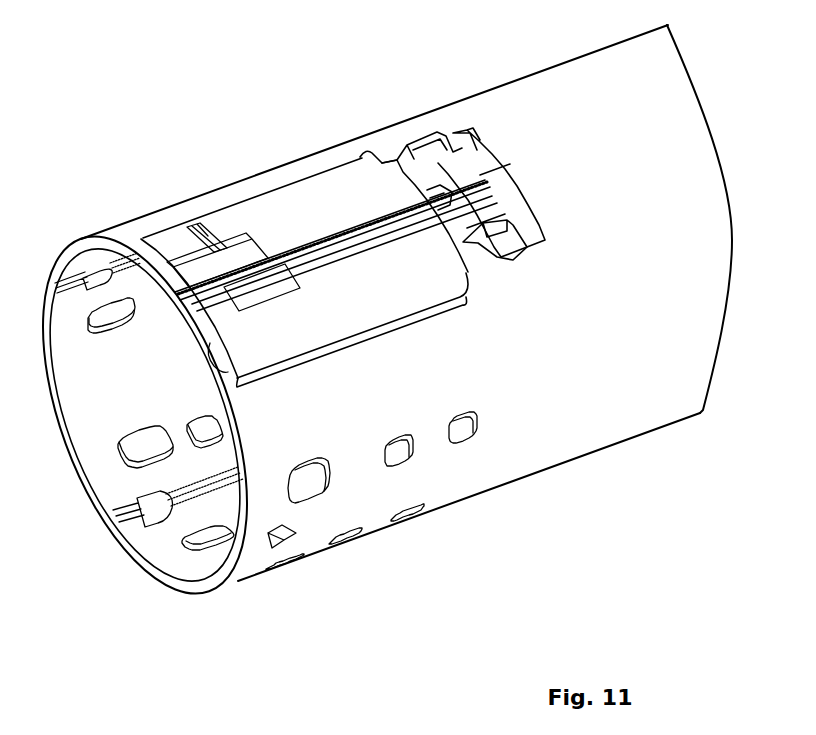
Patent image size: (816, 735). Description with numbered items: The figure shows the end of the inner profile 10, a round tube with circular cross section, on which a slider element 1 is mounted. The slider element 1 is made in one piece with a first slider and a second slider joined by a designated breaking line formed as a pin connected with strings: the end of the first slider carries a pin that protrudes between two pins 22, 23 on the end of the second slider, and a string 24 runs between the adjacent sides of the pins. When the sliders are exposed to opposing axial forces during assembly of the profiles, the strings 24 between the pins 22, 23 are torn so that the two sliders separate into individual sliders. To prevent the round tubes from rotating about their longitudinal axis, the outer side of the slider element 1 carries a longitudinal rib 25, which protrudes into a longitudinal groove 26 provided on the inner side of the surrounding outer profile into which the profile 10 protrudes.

The slider element 1 is at (457, 294).
The profile 10 is at (367, 322).
The pin 22 is at (367, 160).
The pin 23 is at (450, 188).
The string 24 is at (417, 192).
The longitudinal rib 25 is at (292, 252).
The longitudinal groove 26 is at (103, 523).